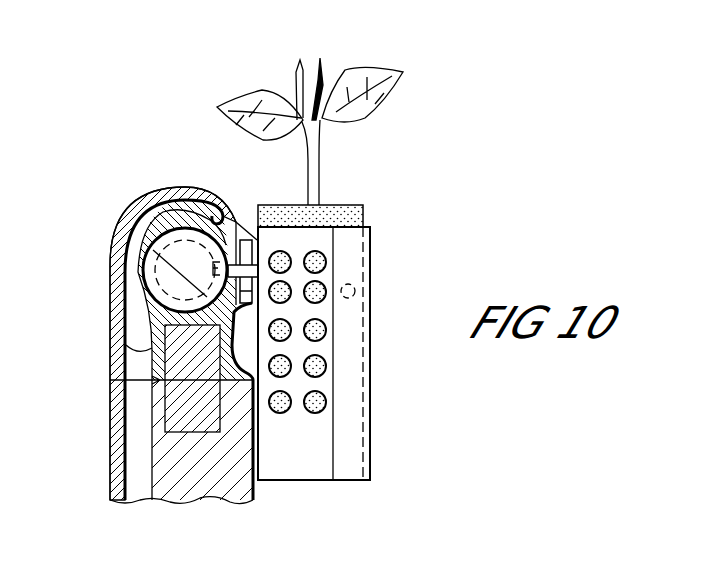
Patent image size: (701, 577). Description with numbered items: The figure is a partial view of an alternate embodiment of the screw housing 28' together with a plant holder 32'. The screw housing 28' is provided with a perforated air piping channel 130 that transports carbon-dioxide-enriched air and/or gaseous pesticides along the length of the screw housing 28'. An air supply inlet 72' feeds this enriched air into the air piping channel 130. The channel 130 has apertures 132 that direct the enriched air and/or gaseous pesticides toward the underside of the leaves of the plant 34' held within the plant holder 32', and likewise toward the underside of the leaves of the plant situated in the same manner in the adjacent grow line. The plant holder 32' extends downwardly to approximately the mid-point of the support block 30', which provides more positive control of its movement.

The screw housing 28' is at (143, 345).
The support block 30' is at (181, 469).
The plant holder 32' is at (314, 367).
The plant 34' is at (310, 107).
The air supply inlet 72' is at (130, 413).
The perforated air piping channel 130 is at (163, 210).
The apertures 132 is at (222, 197).